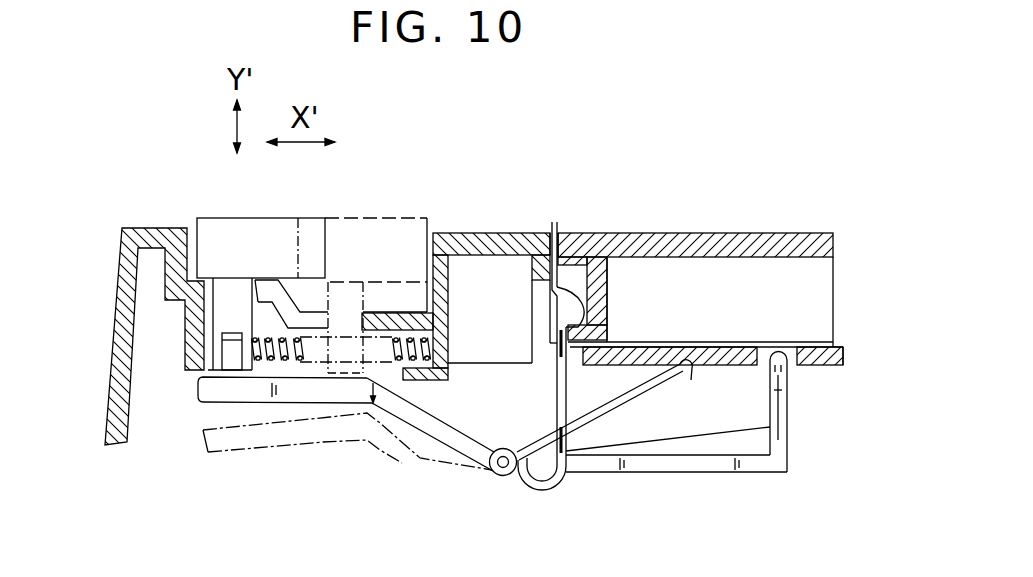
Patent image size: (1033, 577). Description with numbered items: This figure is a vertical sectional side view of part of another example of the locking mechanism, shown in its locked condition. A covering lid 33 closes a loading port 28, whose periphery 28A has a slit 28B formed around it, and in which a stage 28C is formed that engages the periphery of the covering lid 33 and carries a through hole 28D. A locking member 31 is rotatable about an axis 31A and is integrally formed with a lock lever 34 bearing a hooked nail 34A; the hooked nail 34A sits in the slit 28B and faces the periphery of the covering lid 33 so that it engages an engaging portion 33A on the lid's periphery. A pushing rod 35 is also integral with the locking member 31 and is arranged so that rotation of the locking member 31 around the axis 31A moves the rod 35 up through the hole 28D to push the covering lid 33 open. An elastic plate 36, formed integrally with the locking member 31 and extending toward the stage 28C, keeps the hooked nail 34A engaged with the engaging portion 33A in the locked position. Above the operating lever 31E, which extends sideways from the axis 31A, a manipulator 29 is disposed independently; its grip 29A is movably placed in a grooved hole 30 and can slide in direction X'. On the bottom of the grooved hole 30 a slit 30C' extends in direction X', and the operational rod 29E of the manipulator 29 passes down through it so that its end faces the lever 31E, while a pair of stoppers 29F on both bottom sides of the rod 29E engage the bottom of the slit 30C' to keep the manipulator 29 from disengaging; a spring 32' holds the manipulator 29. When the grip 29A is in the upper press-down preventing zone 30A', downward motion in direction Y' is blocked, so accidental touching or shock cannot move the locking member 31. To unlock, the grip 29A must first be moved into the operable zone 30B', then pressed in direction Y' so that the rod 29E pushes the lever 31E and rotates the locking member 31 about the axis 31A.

The loading port 28 is at (848, 267).
The periphery of the loading port 28A is at (552, 233).
The slit 28B is at (537, 317).
The stage 28C is at (738, 345).
The through hole 28D is at (793, 345).
The manipulator 29 is at (205, 213).
The grip 29A is at (270, 217).
The operational rod 29E is at (230, 303).
The stoppers 29F is at (228, 341).
The grooved hole 30 is at (188, 227).
The press-down preventing zone 30A' is at (347, 235).
The operable zone 30B' is at (374, 279).
The slit 30C' is at (248, 443).
The locking member 31 is at (510, 480).
The axis 31A is at (493, 475).
The operating lever 31E is at (413, 417).
The spring 32' is at (459, 306).
The covering lid 33 is at (722, 233).
The engaging portion 33A is at (583, 333).
The lock lever 34 is at (558, 393).
The hooked nail 34A is at (583, 250).
The pushing rod 35 is at (787, 390).
The elastic plate 36 is at (617, 407).